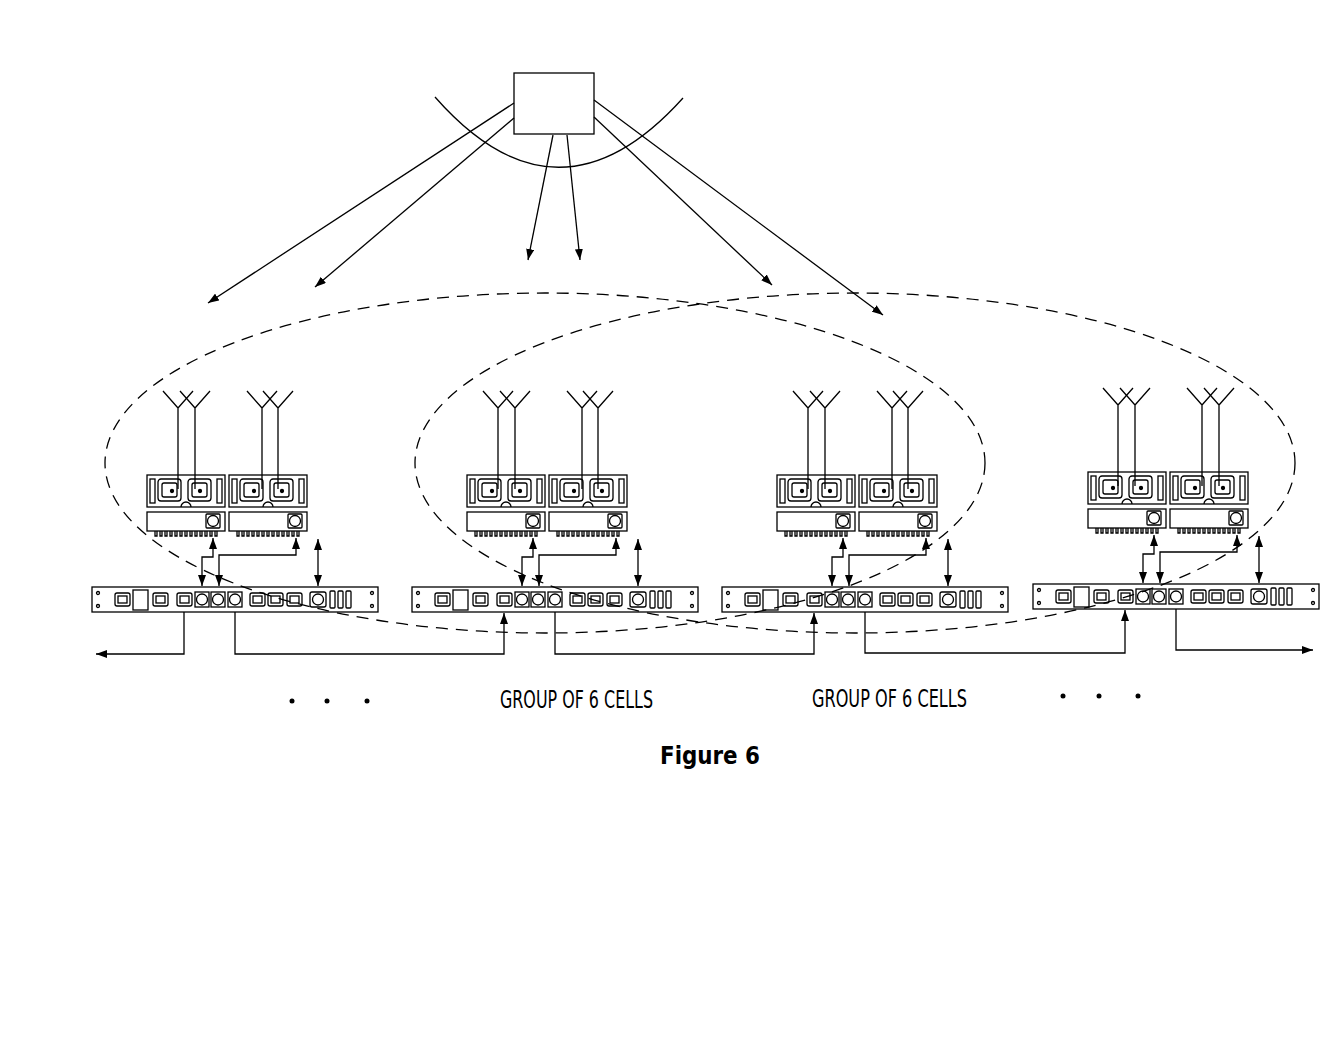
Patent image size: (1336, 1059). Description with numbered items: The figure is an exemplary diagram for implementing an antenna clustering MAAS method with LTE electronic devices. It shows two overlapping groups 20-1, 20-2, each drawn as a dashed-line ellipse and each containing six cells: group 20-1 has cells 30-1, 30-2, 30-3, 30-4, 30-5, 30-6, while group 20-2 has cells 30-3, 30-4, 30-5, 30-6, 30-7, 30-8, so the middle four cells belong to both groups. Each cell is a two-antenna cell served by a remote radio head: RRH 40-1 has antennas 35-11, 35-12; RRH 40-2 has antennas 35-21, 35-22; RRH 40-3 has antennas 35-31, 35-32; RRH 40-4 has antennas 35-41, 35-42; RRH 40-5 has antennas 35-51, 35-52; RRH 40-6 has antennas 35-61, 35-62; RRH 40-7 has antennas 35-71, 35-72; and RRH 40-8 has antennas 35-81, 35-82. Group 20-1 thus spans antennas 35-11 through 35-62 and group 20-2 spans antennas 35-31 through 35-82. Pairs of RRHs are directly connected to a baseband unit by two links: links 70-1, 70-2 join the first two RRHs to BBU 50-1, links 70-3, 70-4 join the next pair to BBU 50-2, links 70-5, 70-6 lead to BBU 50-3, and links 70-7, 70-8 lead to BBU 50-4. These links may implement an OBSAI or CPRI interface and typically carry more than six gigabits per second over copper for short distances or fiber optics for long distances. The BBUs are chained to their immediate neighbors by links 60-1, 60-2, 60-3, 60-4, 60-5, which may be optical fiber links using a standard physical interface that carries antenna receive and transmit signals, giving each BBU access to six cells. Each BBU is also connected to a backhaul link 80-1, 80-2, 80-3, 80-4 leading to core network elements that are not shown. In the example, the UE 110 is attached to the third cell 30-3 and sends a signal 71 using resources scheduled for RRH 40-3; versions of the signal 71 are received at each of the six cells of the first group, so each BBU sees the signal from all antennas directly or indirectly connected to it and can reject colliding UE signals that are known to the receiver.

The UE 110 is at (567, 126).
The signal 71 is at (684, 98).
The group 20-1 is at (384, 303).
The group 20-2 is at (979, 296).
The cell 30-1 is at (200, 327).
The cell 30-2 is at (277, 326).
The cell 30-3 is at (520, 292).
The cell 30-4 is at (589, 292).
The cell 30-5 is at (810, 324).
The cell 30-6 is at (900, 322).
The cell 30-7 is at (1125, 322).
The cell 30-8 is at (1212, 322).
The antenna 35-11 is at (177, 421).
The antenna 35-12 is at (196, 421).
The antenna 35-21 is at (261, 457).
The antenna 35-22 is at (279, 417).
The antenna 35-31 is at (497, 421).
The antenna 35-32 is at (516, 421).
The antenna 35-41 is at (581, 457).
The antenna 35-42 is at (599, 417).
The antenna 35-51 is at (807, 419).
The antenna 35-52 is at (826, 419).
The antenna 35-61 is at (891, 455).
The antenna 35-62 is at (909, 414).
The antenna 35-71 is at (1117, 414).
The antenna 35-72 is at (1136, 415).
The antenna 35-81 is at (1201, 452).
The antenna 35-82 is at (1220, 411).
The remote radio head 40-1 is at (155, 471).
The remote radio head 40-2 is at (303, 471).
The remote radio head 40-3 is at (475, 471).
The remote radio head 40-4 is at (623, 471).
The remote radio head 40-5 is at (785, 469).
The remote radio head 40-6 is at (933, 469).
The remote radio head 40-7 is at (1096, 467).
The remote radio head 40-8 is at (1248, 466).
The link 70-1 is at (202, 572).
The link 70-2 is at (250, 556).
The link 70-3 is at (522, 570).
The link 70-4 is at (570, 555).
The link 70-5 is at (832, 568).
The link 70-6 is at (879, 555).
The link 70-7 is at (1143, 570).
The link 70-8 is at (1189, 553).
The backhaul link 80-1 is at (318, 560).
The backhaul link 80-2 is at (638, 558).
The backhaul link 80-3 is at (948, 556).
The backhaul link 80-4 is at (1259, 556).
The baseband unit 50-1 is at (208, 629).
The baseband unit 50-2 is at (528, 629).
The baseband unit 50-3 is at (833, 629).
The baseband unit 50-4 is at (1149, 626).
The link 60-1 is at (180, 653).
The link 60-2 is at (427, 652).
The link 60-3 is at (752, 652).
The link 60-4 is at (1070, 650).
The link 60-5 is at (1274, 648).